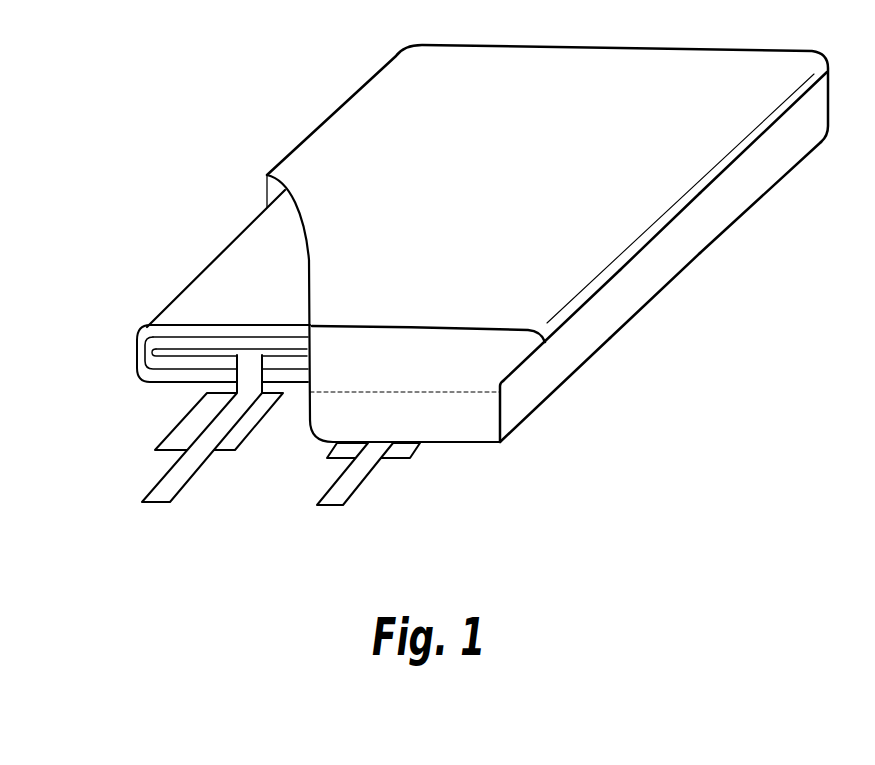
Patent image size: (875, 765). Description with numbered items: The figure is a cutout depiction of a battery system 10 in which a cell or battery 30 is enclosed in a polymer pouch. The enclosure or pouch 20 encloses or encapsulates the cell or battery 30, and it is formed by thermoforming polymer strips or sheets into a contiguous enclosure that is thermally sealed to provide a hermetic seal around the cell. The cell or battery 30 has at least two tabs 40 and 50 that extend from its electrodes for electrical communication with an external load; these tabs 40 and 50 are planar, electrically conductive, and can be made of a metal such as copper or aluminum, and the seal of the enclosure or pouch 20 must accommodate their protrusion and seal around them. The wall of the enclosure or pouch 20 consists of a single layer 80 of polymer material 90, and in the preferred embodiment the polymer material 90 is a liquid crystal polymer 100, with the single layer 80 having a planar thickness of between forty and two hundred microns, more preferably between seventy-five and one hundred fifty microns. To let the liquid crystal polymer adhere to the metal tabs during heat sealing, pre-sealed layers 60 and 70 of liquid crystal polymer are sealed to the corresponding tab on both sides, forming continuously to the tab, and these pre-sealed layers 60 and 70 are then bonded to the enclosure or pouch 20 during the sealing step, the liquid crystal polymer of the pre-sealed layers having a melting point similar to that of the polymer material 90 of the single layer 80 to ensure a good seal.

The battery system 10 is at (731, 244).
The enclosure or pouch 20 is at (572, 347).
The cell or battery 30 is at (240, 280).
The tab 40 is at (155, 507).
The tab 50 is at (330, 507).
The pre-sealed layer 60 is at (223, 453).
The pre-sealed layer 70 is at (393, 457).
The single layer 80 is at (620, 297).
The polymer material 90 is at (662, 255).
The liquid crystal polymer 100 is at (758, 160).